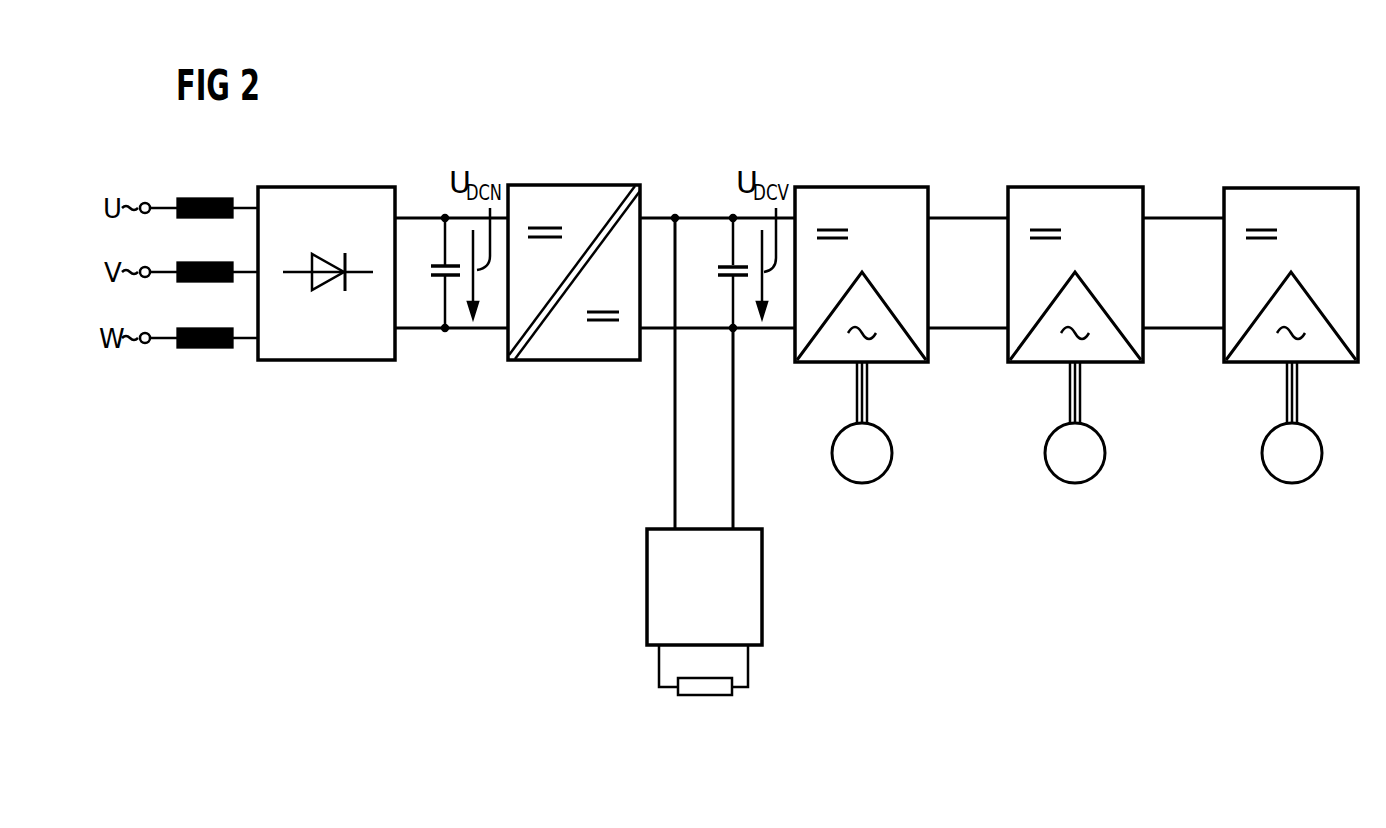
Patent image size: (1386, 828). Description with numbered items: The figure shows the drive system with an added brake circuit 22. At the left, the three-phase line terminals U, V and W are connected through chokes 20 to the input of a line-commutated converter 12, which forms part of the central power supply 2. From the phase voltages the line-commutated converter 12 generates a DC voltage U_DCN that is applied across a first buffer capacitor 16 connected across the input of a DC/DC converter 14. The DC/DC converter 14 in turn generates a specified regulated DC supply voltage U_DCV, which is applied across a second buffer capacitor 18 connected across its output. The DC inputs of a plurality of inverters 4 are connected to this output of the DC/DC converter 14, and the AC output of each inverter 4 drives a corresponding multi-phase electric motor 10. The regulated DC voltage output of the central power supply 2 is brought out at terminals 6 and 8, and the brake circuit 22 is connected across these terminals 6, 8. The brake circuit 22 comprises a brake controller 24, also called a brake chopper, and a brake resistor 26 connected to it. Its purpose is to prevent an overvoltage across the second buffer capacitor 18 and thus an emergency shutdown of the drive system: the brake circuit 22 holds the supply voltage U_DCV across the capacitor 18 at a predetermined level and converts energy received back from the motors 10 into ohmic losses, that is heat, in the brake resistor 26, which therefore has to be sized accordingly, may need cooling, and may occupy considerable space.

The central power supply 2 is at (444, 135).
The inverter 4 is at (862, 187).
The terminal 6 is at (675, 215).
The terminal 8 is at (736, 331).
The multi-phase electric motor 10 is at (892, 453).
The line-commutated converter 12 is at (330, 186).
The DC/DC converter 14 is at (577, 185).
The first buffer capacitor 16 is at (438, 262).
The second buffer capacitor 18 is at (727, 262).
The choke 20 is at (186, 197).
The brake circuit 22 is at (796, 685).
The brake controller 24 is at (763, 590).
The brake resistor 26 is at (705, 697).